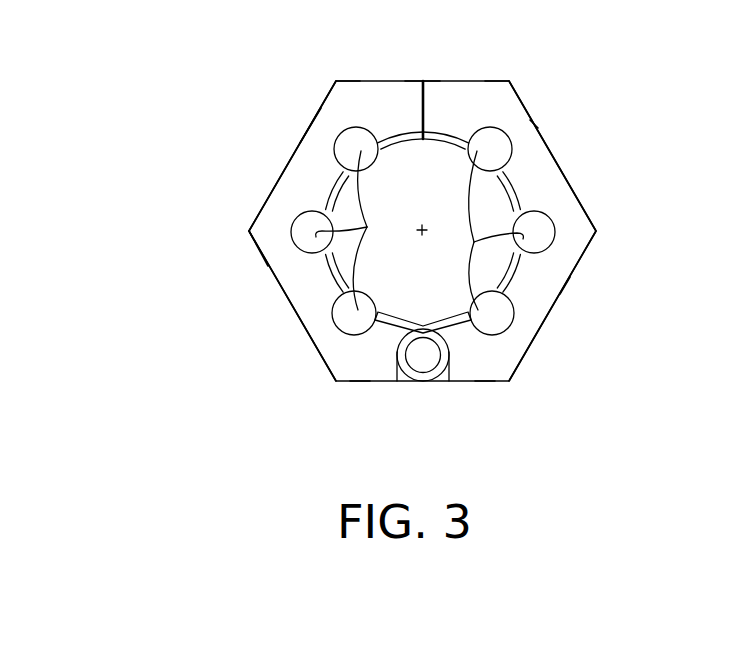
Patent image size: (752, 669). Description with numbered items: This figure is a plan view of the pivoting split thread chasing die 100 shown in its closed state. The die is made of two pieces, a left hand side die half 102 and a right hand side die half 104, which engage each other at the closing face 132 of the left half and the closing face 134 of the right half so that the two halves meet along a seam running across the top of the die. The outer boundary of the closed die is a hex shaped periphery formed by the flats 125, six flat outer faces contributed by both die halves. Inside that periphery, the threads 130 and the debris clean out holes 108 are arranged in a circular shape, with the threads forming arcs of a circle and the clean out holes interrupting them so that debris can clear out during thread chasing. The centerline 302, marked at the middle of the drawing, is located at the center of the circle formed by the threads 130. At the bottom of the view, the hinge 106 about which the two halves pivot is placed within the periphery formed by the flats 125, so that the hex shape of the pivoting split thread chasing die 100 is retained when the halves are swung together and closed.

The pivoting split thread chasing die 100 is at (106, 70).
The left hand side die half 102 is at (281, 179).
The right hand side die half 104 is at (571, 186).
The hinge 106 is at (423, 394).
The debris clean out holes 108 is at (423, 231).
The flats 125 is at (360, 81).
The threads 130 is at (398, 142).
The closing face 132 is at (420, 81).
The closing face 134 is at (424, 81).
The centerline 302 is at (418, 236).